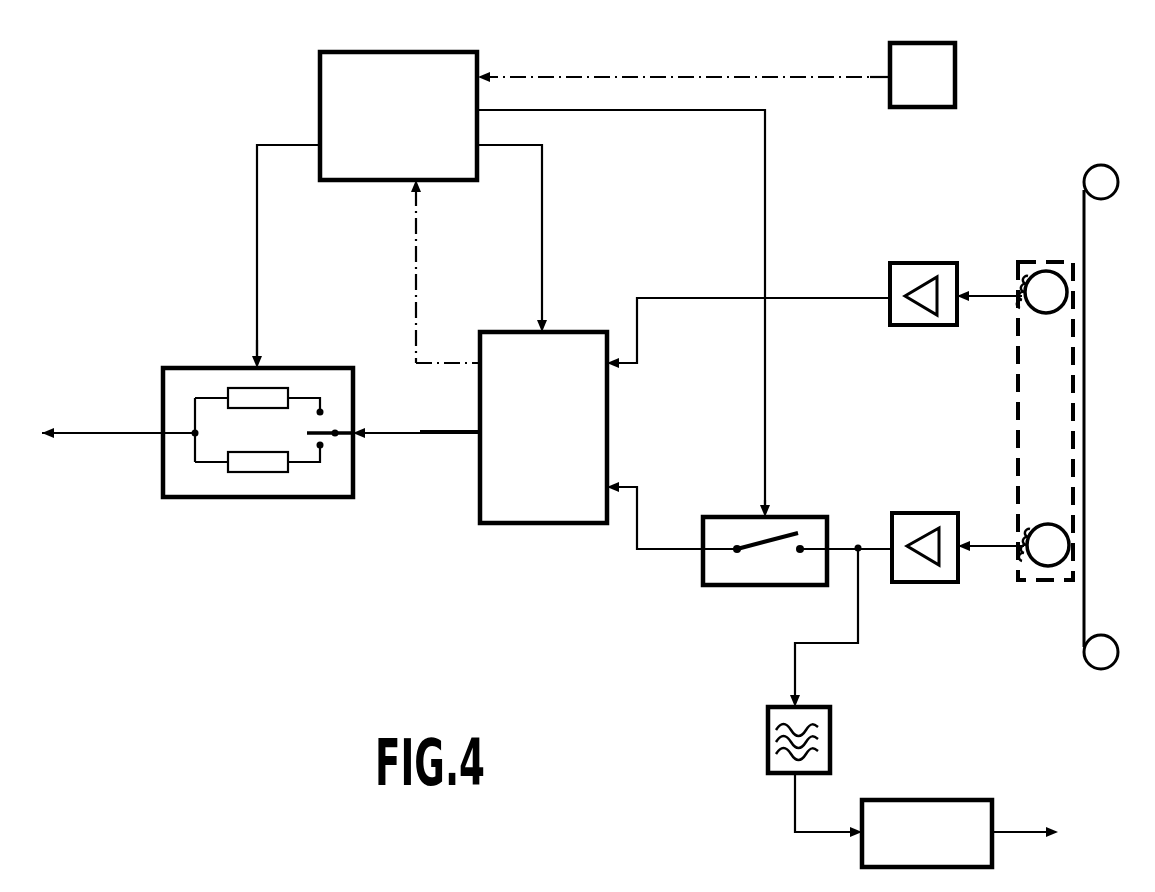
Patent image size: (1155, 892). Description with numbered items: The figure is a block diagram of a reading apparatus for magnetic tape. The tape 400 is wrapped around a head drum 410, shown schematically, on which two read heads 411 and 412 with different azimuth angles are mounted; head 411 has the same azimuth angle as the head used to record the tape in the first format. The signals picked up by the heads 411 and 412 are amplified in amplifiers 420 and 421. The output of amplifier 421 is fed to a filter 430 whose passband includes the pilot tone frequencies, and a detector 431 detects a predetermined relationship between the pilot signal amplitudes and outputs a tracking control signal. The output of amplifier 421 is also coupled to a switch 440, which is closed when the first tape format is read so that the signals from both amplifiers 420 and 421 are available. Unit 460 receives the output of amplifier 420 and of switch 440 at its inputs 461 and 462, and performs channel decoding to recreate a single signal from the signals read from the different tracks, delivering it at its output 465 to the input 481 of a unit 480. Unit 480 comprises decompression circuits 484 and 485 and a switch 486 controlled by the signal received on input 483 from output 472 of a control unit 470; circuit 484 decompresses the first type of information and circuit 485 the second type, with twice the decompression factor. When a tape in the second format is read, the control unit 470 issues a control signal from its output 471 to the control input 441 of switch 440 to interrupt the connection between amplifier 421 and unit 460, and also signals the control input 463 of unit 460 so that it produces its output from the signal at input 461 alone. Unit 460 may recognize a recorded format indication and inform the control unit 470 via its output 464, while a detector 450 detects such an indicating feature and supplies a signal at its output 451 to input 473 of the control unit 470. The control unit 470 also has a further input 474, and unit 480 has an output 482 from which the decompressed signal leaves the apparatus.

The tape 400 is at (1086, 238).
The head drum 410 is at (1018, 415).
The read head 411 is at (1040, 268).
The read head 412 is at (1046, 572).
The amplifier 420 is at (921, 272).
The amplifier 421 is at (926, 520).
The filter 430 is at (818, 718).
The detector 431 is at (938, 808).
The switch 440 is at (808, 520).
The control input 441 is at (762, 515).
The detector 450 is at (935, 57).
The output 451 is at (888, 74).
The unit 460 is at (575, 348).
The input 461 is at (612, 366).
The input 462 is at (612, 484).
The control input 463 is at (538, 328).
The output 464 is at (476, 367).
The output 465 is at (476, 440).
The control unit 470 is at (403, 65).
The output 471 is at (480, 108).
The output 472 is at (318, 140).
The input 473 is at (482, 75).
The control unit feedback input 474 is at (420, 188).
The unit 480 is at (229, 499).
The input 481 is at (356, 428).
The output of resistor circuit 482 is at (162, 430).
The input 483 is at (264, 366).
The decompression circuit 484 is at (243, 393).
The decompression circuit 485 is at (274, 466).
The switch 486 is at (330, 445).